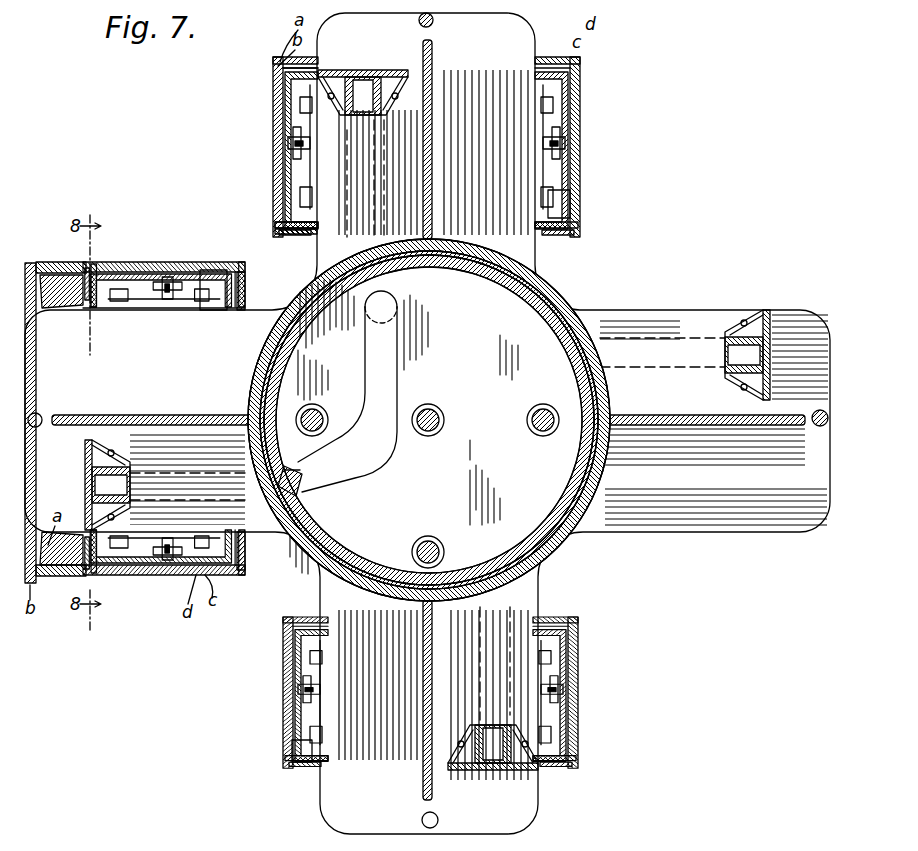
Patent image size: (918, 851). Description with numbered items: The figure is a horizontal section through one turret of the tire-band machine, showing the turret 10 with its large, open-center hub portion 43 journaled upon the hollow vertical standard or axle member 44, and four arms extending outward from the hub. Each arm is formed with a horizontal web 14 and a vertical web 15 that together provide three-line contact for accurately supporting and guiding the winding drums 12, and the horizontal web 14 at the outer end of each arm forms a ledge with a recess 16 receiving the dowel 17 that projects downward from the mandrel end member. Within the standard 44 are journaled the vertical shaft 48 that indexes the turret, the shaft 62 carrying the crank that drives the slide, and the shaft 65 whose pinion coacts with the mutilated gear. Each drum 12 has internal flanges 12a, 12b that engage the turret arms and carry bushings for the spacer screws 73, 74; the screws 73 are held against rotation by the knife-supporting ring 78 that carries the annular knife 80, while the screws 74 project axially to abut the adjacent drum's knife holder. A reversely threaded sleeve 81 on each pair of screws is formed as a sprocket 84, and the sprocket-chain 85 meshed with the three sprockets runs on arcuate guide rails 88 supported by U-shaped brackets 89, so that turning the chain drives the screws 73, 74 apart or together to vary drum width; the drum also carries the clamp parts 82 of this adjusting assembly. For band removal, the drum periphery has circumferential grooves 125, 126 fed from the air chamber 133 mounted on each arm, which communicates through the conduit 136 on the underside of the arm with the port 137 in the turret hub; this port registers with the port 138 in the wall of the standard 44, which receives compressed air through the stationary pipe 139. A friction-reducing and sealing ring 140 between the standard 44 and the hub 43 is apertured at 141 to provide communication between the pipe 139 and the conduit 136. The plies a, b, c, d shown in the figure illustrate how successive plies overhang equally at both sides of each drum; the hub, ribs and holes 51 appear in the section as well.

The hub ring 10 is at (548, 292).
The winding form or drum 12 is at (570, 200).
The internal flange 12a is at (225, 285).
The internal flange 12b is at (300, 762).
The horizontal web 14 is at (532, 50).
The vertical web 15 is at (433, 122).
The recess 16 is at (37, 412).
The dowel 17 is at (420, 22).
The hub portion 43 is at (556, 556).
The standard or axle member 44 is at (575, 535).
The vertical shaft 48 is at (546, 406).
The hub center hole 51 is at (438, 412).
The shaft 62 is at (436, 542).
The shaft 65 is at (320, 412).
The spacer screw 73 is at (300, 237).
The spacer screw 74 is at (310, 66).
The knife-supporting ring 78 is at (304, 240).
The annular knife 80 is at (290, 232).
The sleeve 81 is at (560, 120).
The clamp block 82 is at (565, 100).
The sprocket 84 is at (565, 158).
The sprocket-chain 85 is at (155, 565).
The arcuate guide rail 88 is at (306, 146).
The U-shaped bracket 89 is at (565, 143).
The circumferential groove 125 is at (585, 66).
The circumferential groove 126 is at (580, 76).
The air chamber 133 is at (372, 72).
The conduit 136 is at (375, 197).
The port 137 is at (300, 505).
The port 138 is at (292, 468).
The stationary pipe 139 is at (355, 456).
The friction-reducing and sealing ring 140 is at (270, 390).
The aperture 141 is at (298, 488).